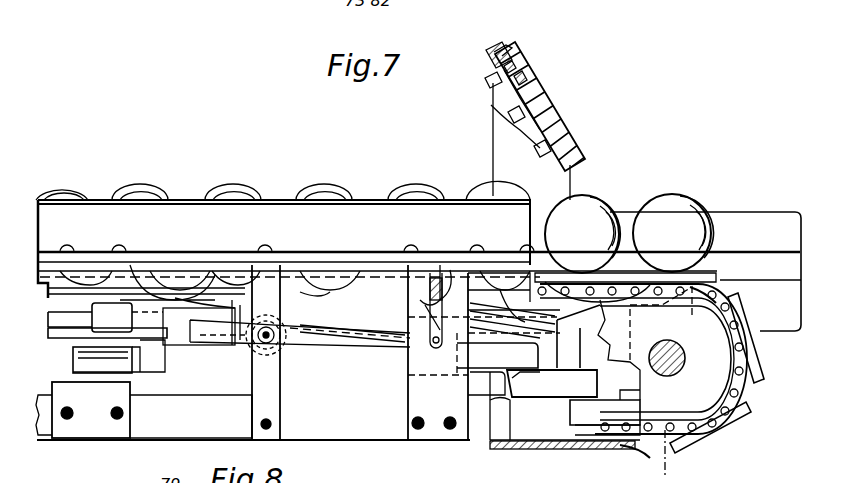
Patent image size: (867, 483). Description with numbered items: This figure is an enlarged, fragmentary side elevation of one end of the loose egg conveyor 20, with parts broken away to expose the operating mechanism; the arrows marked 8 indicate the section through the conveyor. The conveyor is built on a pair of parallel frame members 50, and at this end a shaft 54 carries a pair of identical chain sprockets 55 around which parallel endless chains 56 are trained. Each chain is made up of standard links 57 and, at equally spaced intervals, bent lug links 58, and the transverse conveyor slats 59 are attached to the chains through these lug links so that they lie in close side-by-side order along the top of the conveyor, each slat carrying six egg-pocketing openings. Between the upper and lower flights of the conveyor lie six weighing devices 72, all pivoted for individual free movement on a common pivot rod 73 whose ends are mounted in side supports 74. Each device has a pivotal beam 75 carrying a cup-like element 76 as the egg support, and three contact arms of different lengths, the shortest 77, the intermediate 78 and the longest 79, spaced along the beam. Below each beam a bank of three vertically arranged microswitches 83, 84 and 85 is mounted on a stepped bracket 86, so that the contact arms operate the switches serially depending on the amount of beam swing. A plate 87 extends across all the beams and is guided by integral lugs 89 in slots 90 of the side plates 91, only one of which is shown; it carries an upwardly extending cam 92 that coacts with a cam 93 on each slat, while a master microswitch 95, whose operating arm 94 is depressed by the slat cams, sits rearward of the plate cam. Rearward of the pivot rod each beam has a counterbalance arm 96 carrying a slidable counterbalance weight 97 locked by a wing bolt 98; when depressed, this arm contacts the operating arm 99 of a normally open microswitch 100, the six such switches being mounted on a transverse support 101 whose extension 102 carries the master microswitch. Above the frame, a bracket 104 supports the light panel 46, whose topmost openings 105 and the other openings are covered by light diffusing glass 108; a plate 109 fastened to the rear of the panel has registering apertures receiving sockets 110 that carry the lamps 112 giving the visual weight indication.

The section line 8- 8 is at (665, 427).
The loose egg conveyor 20 is at (412, 455).
The light panel 46 is at (552, 104).
The frame members 50 is at (360, 210).
The shaft 54 is at (686, 358).
The chain sprockets 55 is at (722, 378).
The endless chains 56 is at (707, 432).
The standard links 57 is at (720, 290).
The bent lug links 58 is at (712, 272).
The conveyor slats 59 is at (757, 345).
The weighing devices 72 is at (363, 353).
The pivot rod 73 is at (268, 340).
The side supports 74 is at (256, 380).
The pivotal beam 75 is at (382, 335).
The cup-like element 76 is at (630, 358).
The shortest contact arm 77 is at (580, 340).
The intermediate contact arm 78 is at (552, 383).
The longest contact arm 79 is at (627, 374).
The microswitch 83 is at (490, 362).
The microswitch 84 is at (563, 388).
The microswitch 85 is at (607, 417).
The stepped bracket 86 is at (525, 400).
The plate 87 is at (514, 291).
The lugs 89 is at (420, 305).
The slots 90 is at (484, 352).
The side plates 91 is at (420, 400).
The cam 92 is at (480, 271).
The cam 93 is at (312, 292).
The operating arm 94 is at (229, 317).
The master microswitch 95 is at (208, 318).
The counterbalance arm 96 is at (55, 328).
The counterbalance weight 97 is at (107, 330).
The wing bolt 98 is at (128, 311).
The operating arm 99 is at (128, 353).
The microswitch 100 is at (90, 363).
The transverse support 101 is at (97, 337).
The extension 102 is at (190, 338).
The bracket 104 is at (562, 175).
The topmost openings 105 is at (510, 47).
The light diffusing glass 108 is at (509, 73).
The plate 109 is at (490, 58).
The sockets 110 is at (512, 118).
The lamps 112 is at (526, 80).